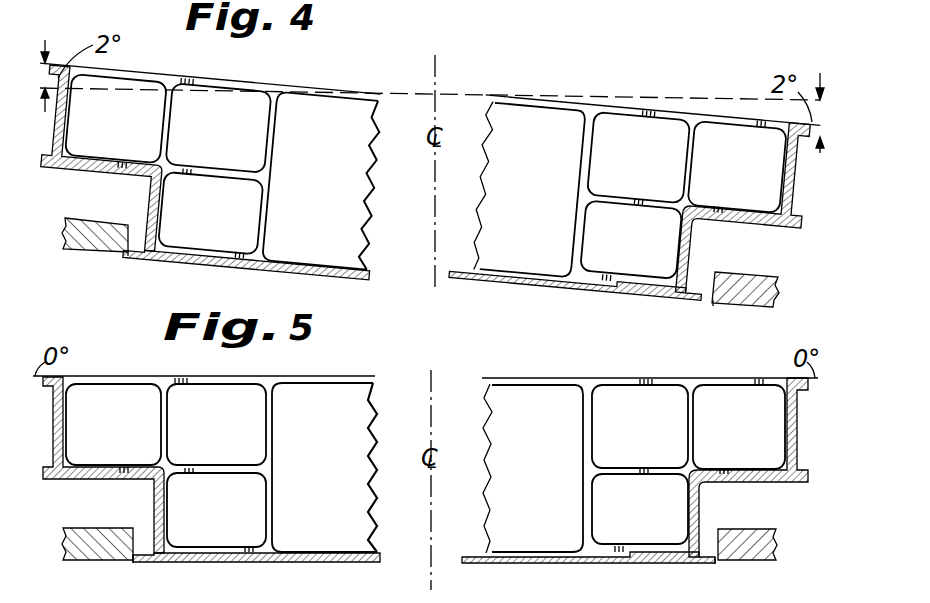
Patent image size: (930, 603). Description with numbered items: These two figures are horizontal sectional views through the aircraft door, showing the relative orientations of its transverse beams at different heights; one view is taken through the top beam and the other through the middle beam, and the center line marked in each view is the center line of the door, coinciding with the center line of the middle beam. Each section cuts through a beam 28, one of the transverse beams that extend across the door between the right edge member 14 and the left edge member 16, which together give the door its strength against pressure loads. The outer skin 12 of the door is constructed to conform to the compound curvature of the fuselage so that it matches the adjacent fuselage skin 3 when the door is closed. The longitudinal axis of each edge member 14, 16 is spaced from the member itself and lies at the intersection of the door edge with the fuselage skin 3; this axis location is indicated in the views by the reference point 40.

In FIG. 4, the fuselage skin 3 is at (87, 252).
In FIG. 5, the fuselage skin 3 is at (92, 560).
In FIG. 4, the outer skin 12 is at (560, 297).
In FIG. 5, the outer skin 12 is at (607, 563).
In FIG. 4, the right edge member 14 is at (752, 228).
In FIG. 5, the right edge member 14 is at (740, 482).
In FIG. 4, the left edge member 16 is at (88, 171).
In FIG. 5, the left edge member 16 is at (83, 480).
In FIG. 4, the beam 28 is at (325, 86).
In FIG. 4, the reference point 40 is at (125, 262).
In FIG. 5, the reference point 40 is at (137, 562).